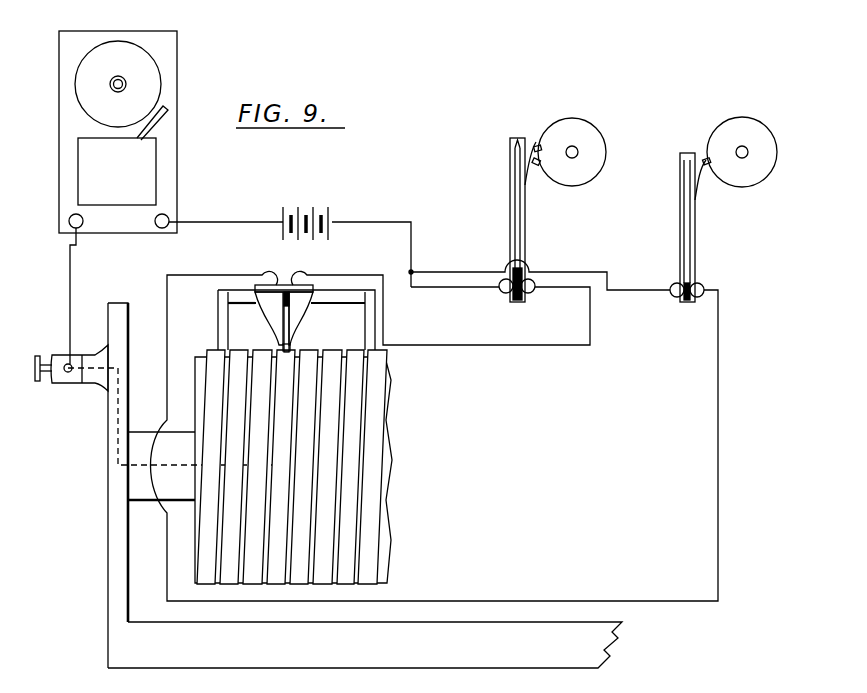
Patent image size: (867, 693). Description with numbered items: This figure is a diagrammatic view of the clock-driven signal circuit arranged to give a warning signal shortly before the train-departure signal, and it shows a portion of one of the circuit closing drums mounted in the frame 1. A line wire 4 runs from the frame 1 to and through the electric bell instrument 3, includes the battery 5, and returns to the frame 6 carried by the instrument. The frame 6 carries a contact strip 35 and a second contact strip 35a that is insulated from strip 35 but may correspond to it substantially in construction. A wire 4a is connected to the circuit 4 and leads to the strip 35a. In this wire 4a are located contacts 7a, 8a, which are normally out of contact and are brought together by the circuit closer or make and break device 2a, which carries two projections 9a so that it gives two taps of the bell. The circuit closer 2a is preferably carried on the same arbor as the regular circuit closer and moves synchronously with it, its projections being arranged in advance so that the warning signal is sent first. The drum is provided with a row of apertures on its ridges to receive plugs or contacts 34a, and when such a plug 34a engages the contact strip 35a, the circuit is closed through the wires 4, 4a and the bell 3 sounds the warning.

The frame 1 is at (365, 645).
The electric bell instrument 3 is at (128, 132).
The line wire 4 is at (394, 400).
The wire 4a is at (440, 308).
The battery 5 is at (305, 209).
The frame 6 is at (278, 289).
The circuit closer 2a is at (581, 153).
The contact 7a is at (503, 204).
The contact 8a is at (527, 220).
The projection 9a is at (537, 146).
The contact strip 35 is at (270, 316).
The contact strip 35a is at (300, 322).
The plug 34a is at (292, 346).